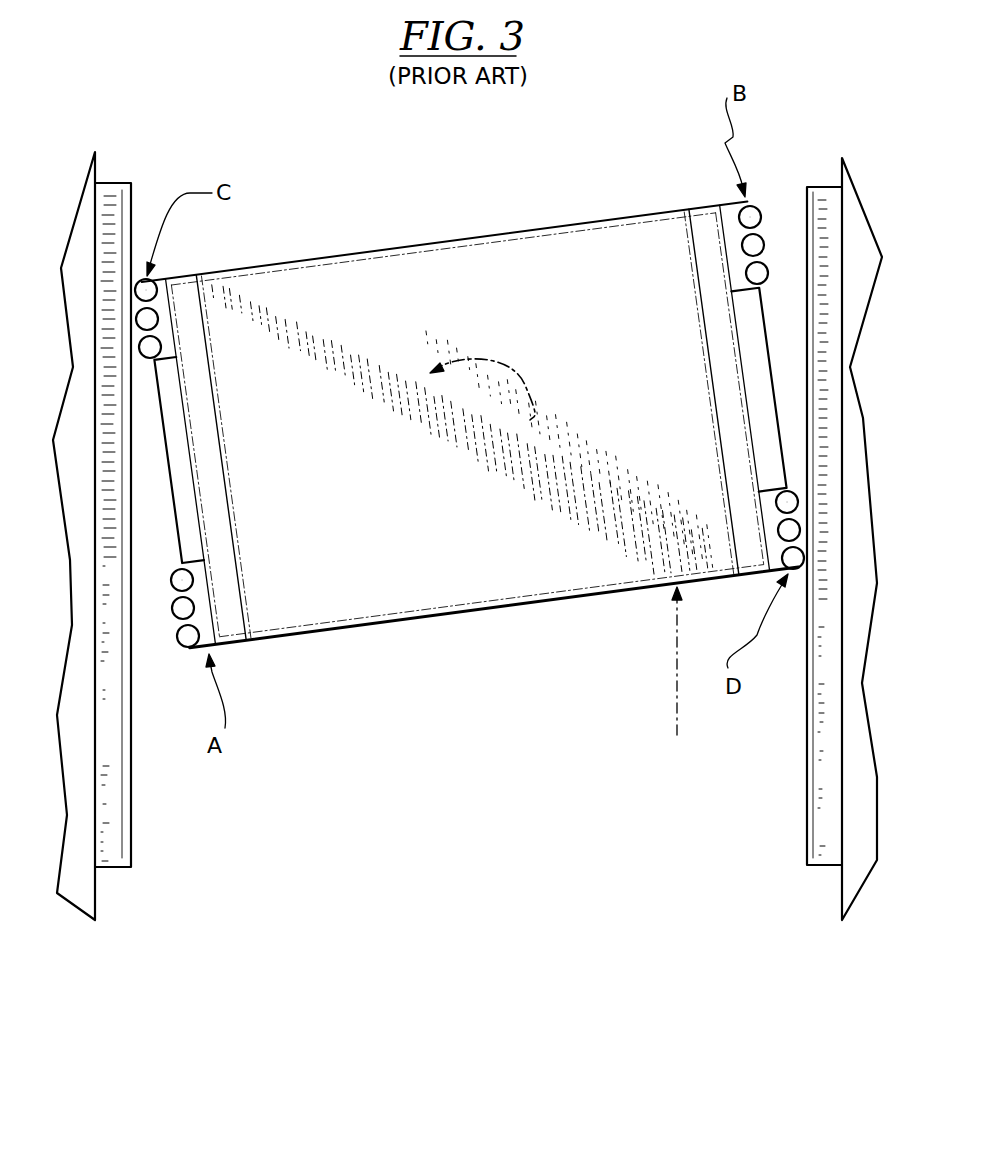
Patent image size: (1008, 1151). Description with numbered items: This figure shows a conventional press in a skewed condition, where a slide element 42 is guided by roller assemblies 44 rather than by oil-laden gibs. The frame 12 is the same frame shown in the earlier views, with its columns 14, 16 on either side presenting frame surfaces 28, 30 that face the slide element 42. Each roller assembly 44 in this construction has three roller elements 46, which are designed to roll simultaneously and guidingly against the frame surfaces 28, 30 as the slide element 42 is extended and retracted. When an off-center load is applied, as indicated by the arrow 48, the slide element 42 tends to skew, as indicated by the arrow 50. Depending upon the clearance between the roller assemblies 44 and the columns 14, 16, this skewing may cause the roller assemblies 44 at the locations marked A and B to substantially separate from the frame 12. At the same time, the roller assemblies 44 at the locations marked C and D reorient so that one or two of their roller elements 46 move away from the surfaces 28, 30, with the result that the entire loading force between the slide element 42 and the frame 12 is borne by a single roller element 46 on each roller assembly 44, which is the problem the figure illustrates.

The frame 12 is at (858, 413).
The column 14 is at (80, 842).
The column 16 is at (852, 837).
The frame surface 28 is at (132, 442).
The frame surface 30 is at (807, 317).
The slide element 42 is at (431, 568).
The roller assembly 44 is at (152, 333).
The roller element 46 is at (185, 635).
The arrow 48 is at (677, 654).
The arrow 50 is at (500, 402).